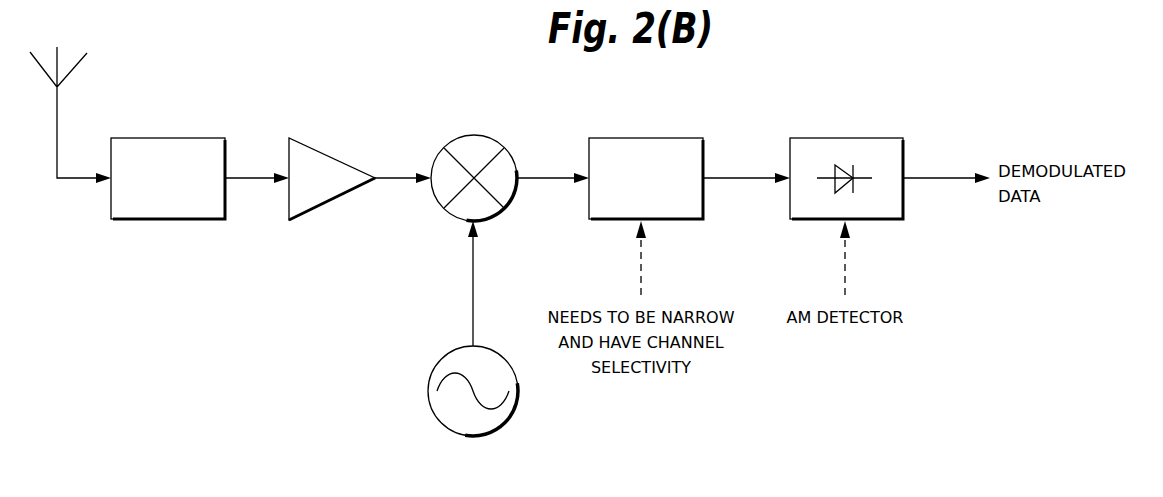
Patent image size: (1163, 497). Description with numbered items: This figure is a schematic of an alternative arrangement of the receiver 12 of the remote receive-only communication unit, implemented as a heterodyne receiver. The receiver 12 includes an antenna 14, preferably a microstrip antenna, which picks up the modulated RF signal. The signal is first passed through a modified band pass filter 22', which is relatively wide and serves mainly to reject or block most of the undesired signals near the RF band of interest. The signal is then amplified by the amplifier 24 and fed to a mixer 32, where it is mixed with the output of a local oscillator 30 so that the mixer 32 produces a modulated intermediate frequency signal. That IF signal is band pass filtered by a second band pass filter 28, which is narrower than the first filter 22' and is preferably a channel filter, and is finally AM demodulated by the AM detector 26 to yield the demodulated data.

The receiver 12 is at (330, 277).
The antenna 14 is at (79, 55).
The modified band pass filter 22' is at (168, 160).
The amplifier 24 is at (317, 148).
The mixer 32 is at (496, 136).
The second band pass filter 28 is at (640, 137).
The AM detector 26 is at (840, 137).
The local oscillator 30 is at (444, 356).